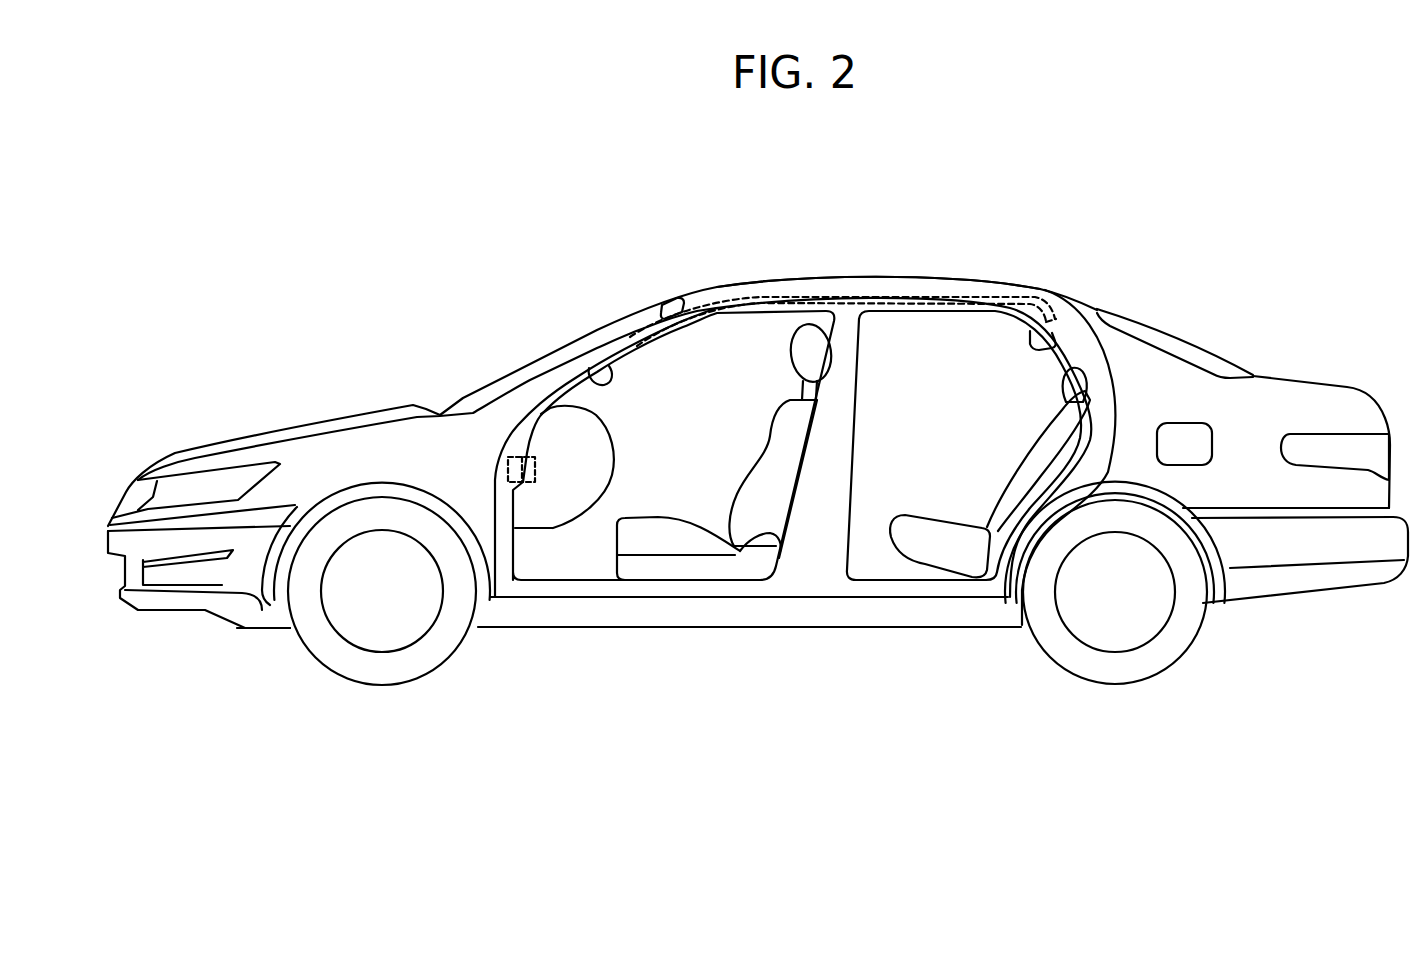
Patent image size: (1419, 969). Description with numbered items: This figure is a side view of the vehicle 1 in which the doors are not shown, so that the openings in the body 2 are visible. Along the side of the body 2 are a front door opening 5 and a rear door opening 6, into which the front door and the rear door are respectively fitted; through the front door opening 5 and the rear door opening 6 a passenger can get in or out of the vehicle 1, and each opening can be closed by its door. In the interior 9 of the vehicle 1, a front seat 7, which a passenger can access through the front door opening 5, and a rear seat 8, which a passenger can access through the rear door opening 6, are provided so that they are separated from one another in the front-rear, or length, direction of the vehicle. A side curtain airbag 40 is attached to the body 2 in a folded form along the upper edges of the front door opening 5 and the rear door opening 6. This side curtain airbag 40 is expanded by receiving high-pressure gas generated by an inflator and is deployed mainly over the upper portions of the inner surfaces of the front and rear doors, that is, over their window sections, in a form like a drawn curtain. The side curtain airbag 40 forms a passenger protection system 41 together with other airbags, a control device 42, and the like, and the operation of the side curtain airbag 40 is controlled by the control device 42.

The vehicle 1 is at (492, 256).
The body 2 is at (814, 279).
The front door opening 5 is at (593, 379).
The rear door opening 6 is at (1050, 340).
The front seat 7 is at (668, 543).
The rear seat 8 is at (938, 554).
The interior 9 is at (915, 364).
The side curtain airbag 40 is at (973, 297).
The passenger protection system 41 is at (684, 300).
The control device 42 is at (505, 466).